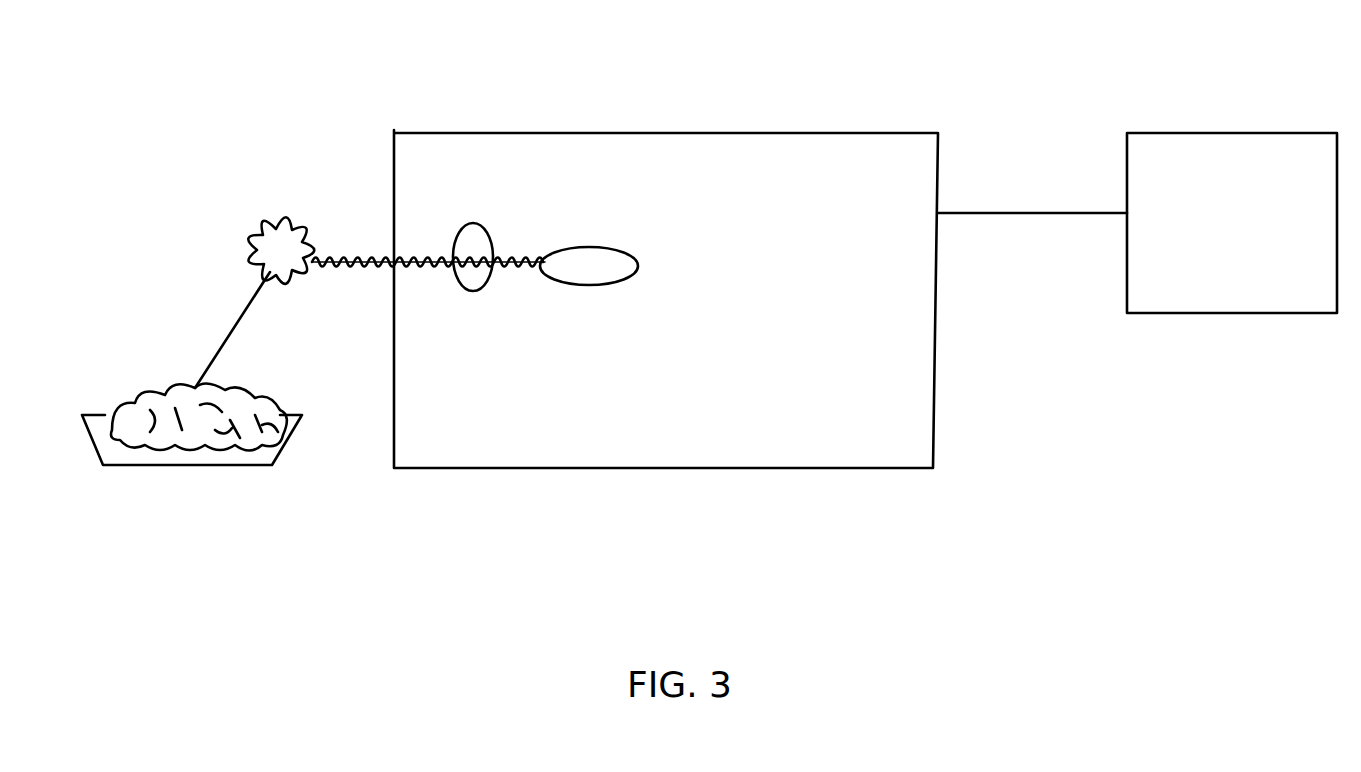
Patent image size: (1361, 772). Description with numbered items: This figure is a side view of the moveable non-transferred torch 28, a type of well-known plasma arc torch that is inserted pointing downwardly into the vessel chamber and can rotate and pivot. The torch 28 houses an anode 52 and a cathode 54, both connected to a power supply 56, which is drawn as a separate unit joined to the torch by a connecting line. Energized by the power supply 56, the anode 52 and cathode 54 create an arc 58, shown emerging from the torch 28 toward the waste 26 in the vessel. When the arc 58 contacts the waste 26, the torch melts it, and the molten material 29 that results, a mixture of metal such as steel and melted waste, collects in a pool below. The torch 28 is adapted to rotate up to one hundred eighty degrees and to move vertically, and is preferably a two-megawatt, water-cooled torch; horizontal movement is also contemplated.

The waste 26 is at (277, 228).
The molten material 29 is at (190, 468).
The arc 58 is at (372, 270).
The moveable non-transferred torch 28 is at (808, 125).
The anode 52 is at (470, 224).
The cathode 54 is at (594, 287).
The power supply 56 is at (1220, 125).